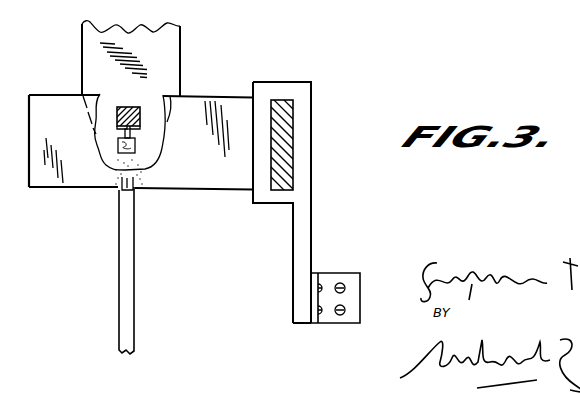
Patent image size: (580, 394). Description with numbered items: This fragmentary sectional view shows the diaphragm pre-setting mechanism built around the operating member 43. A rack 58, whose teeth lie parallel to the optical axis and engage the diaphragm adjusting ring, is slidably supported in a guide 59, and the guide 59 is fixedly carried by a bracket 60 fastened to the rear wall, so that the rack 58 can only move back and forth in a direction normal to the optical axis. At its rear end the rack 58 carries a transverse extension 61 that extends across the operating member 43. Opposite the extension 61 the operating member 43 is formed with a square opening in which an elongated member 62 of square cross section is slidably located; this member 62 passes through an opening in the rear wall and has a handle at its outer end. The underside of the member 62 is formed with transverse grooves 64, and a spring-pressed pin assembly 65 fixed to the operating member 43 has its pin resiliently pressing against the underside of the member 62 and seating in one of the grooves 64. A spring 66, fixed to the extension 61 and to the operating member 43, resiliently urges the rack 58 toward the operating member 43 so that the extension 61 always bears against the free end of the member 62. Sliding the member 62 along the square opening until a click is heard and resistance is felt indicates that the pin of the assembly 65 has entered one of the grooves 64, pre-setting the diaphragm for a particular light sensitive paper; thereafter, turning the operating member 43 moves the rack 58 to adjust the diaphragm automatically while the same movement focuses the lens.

The operating member 43 is at (118, 280).
The rack 58 is at (294, 99).
The guide 59 is at (307, 173).
The bracket 60 is at (343, 278).
The transverse extension 61 is at (240, 175).
The elongated member 62 is at (117, 107).
The transverse grooves 64 is at (132, 165).
The spring-pressed pin assembly 65 is at (135, 143).
The spring 66 is at (124, 198).